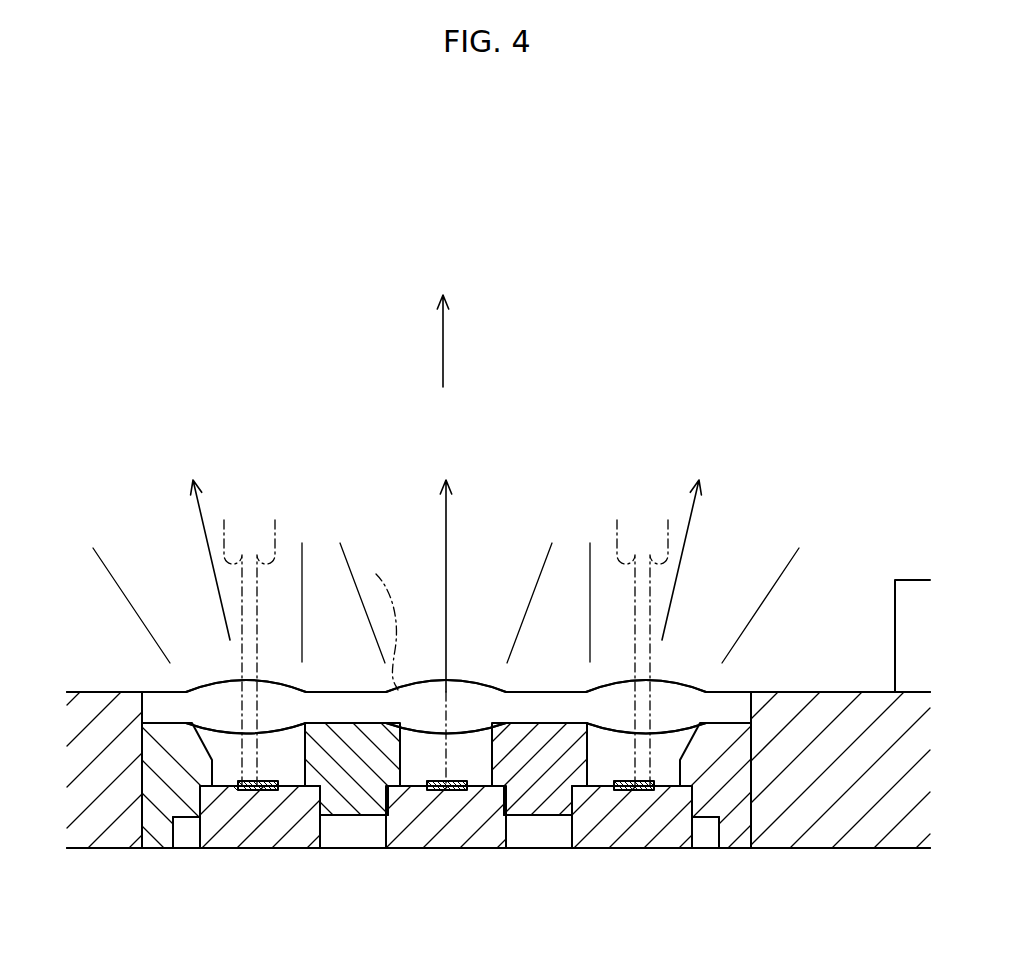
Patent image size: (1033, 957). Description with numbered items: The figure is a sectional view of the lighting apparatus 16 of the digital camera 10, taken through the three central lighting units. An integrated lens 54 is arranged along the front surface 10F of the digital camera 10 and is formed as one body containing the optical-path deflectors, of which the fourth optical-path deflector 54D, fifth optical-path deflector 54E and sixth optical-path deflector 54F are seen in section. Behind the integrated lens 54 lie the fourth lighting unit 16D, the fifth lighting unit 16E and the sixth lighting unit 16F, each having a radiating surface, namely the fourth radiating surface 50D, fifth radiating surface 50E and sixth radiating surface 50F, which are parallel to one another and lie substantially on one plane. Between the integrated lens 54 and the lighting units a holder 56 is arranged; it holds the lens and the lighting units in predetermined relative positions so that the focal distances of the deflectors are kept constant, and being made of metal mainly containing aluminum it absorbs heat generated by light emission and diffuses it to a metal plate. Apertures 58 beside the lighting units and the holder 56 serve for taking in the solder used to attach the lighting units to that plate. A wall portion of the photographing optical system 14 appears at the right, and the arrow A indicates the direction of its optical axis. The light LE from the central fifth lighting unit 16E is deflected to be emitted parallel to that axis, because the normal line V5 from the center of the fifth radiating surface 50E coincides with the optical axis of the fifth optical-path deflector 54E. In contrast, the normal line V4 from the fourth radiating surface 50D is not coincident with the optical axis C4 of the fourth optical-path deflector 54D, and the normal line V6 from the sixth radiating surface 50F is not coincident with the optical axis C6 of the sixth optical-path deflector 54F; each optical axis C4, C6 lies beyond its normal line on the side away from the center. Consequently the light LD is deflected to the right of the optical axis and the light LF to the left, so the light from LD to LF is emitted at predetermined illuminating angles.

The digital camera 10 is at (592, 383).
The front surface 10F is at (103, 692).
The photographing optical system 14 is at (903, 558).
The lighting apparatus 16 is at (749, 662).
The sixth lighting unit 16F is at (287, 830).
The fifth lighting unit 16E is at (472, 830).
The fourth lighting unit 16D is at (658, 830).
The sixth radiating surface 50F is at (252, 790).
The fifth radiating surface 50E is at (433, 790).
The fourth radiating surface 50D is at (625, 790).
The integrated lens 54 is at (760, 695).
The sixth optical-path deflector 54F is at (222, 682).
The fifth optical-path deflector 54E is at (477, 683).
The fourth optical-path deflector 54D is at (677, 682).
The holder 56 is at (343, 747).
The apertures 58 is at (187, 832).
The light from the sixth lighting unit LF is at (239, 552).
The light from the fifth lighting unit LE is at (508, 613).
The light from the fourth lighting unit LD is at (730, 552).
The optical axis of the sixth optical-path deflector C6 is at (224, 636).
The normal line of the sixth radiating surface V6 is at (273, 636).
The normal line of the fourth radiating surface V4 is at (616, 636).
The optical axis of the fourth optical-path deflector C4 is at (666, 636).
The normal line of the fifth radiating surface V5 is at (397, 615).
The arrow indicating the optical axis direction A is at (443, 347).